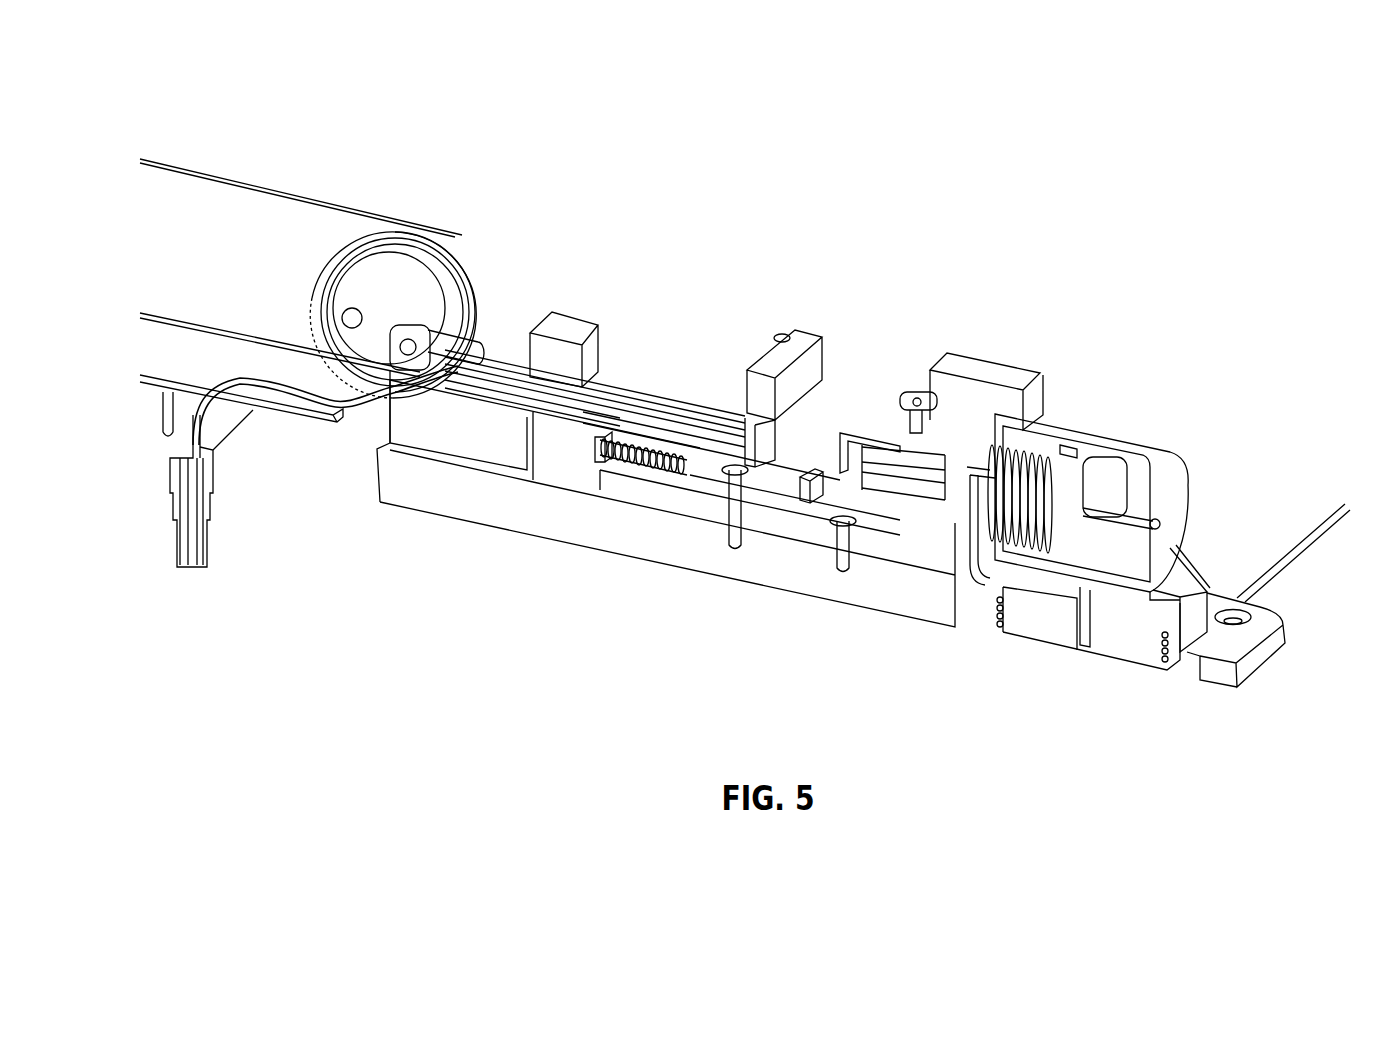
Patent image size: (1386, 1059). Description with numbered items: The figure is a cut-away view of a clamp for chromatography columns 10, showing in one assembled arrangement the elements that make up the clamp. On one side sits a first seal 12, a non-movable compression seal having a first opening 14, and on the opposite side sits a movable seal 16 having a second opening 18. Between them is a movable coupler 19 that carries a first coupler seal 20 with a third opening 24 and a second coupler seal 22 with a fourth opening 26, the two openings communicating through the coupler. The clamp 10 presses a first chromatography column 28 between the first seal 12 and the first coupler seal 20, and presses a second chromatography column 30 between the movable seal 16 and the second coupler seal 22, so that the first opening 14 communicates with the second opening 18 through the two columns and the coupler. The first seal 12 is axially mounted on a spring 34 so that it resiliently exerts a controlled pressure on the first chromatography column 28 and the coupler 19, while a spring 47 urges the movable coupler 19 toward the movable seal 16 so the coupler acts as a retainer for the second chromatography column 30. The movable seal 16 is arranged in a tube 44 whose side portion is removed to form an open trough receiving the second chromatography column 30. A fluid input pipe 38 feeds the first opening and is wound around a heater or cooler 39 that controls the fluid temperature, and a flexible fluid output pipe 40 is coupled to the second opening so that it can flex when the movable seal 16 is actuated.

The clamp for chromatography columns 10 is at (622, 240).
The first seal 12 is at (860, 447).
The first opening 14 is at (882, 475).
The movable seal 16 is at (600, 385).
The second opening 18 is at (625, 392).
The movable coupler 19 is at (790, 335).
The first coupler seal 20 is at (842, 495).
The second coupler seal 22 is at (690, 468).
The third opening 24 is at (812, 478).
The fourth opening 26 is at (742, 405).
The first chromatography column 28 is at (853, 462).
The second chromatography column 30 is at (675, 400).
The spring 34 is at (1020, 457).
The fluid input pipe 38 is at (990, 613).
The heater or cooler 39 is at (1140, 652).
The fluid output pipe 40 is at (305, 398).
The tube 44 is at (597, 420).
The spring 47 is at (607, 487).